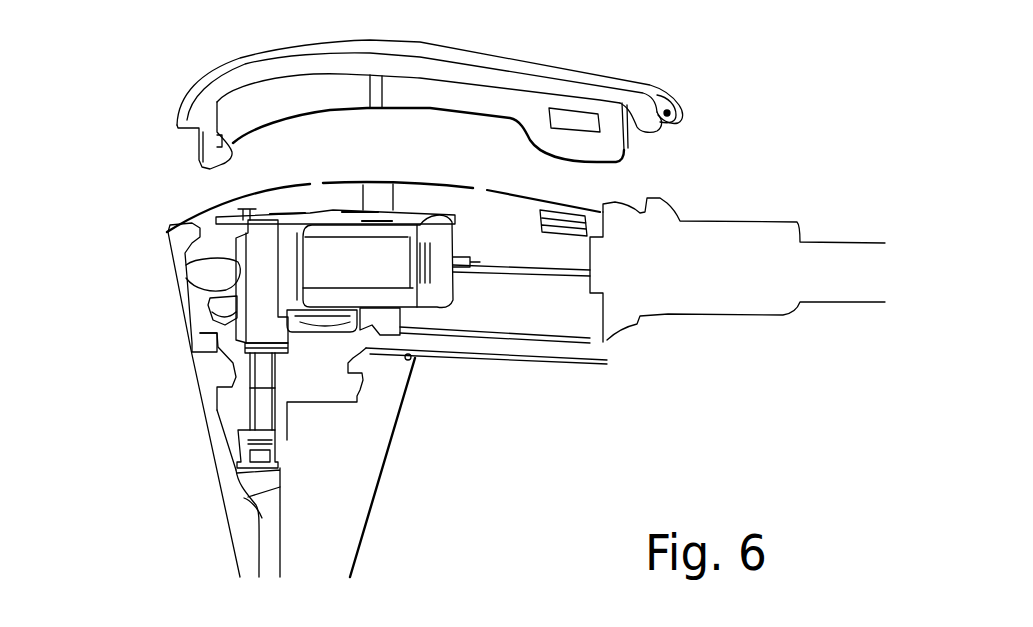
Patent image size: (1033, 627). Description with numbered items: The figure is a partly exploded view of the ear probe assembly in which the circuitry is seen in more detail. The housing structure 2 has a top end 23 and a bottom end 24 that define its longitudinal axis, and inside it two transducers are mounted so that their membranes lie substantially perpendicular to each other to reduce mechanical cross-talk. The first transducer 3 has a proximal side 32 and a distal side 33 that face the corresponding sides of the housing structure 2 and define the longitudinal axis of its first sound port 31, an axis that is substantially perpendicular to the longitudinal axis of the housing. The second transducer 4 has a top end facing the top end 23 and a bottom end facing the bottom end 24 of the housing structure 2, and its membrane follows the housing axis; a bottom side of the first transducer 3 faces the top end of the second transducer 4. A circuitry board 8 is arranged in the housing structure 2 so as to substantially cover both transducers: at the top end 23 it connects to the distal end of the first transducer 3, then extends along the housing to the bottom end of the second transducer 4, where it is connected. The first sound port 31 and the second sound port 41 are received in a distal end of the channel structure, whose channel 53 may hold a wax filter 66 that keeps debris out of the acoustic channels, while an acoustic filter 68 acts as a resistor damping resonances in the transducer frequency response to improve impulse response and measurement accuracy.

The housing structure 2 is at (557, 68).
The top end of the housing structure 23 is at (173, 242).
The first transducer 3 is at (238, 279).
The distal side of the first transducer 33 is at (297, 265).
The circuitry board 8 is at (425, 245).
The second transducer 4 is at (393, 315).
The second sound port 41 is at (373, 295).
The proximal side of the first transducer 32 is at (275, 352).
The channel 53 is at (263, 380).
The first sound port 31 is at (240, 360).
The acoustic filter 68 is at (253, 407).
The wax filter 66 is at (250, 452).
The bottom end of the housing structure 24 is at (627, 348).